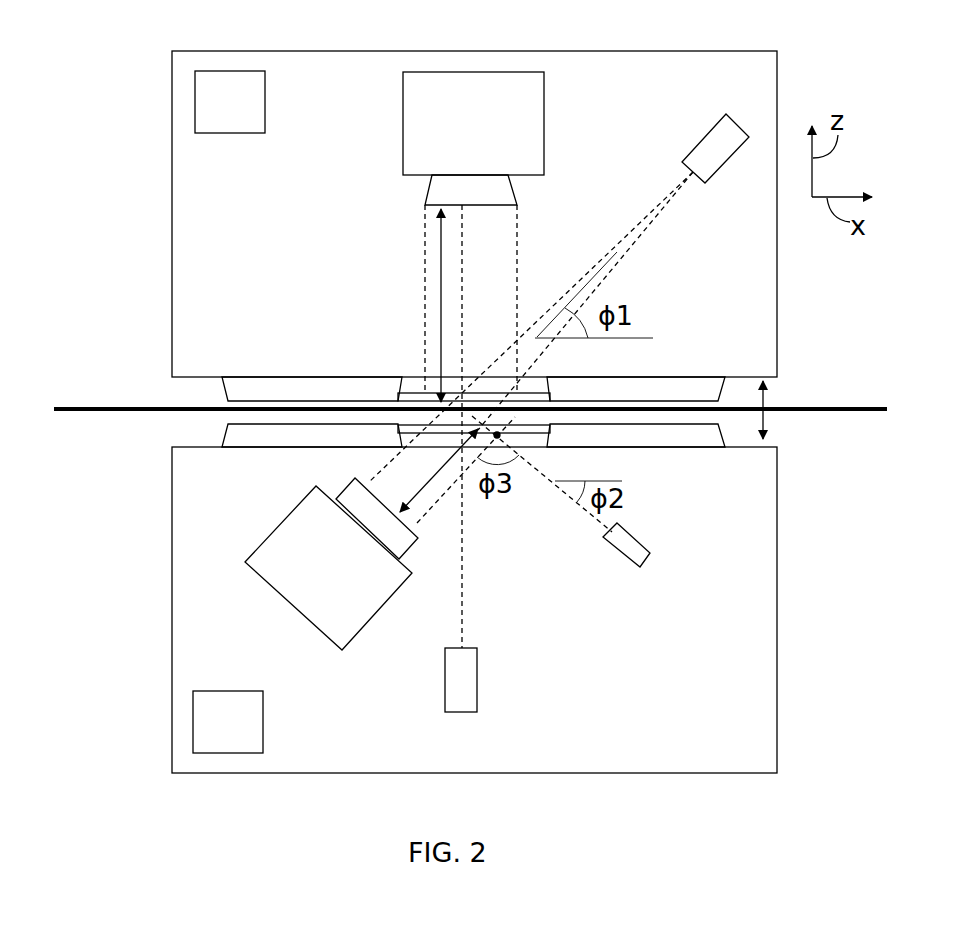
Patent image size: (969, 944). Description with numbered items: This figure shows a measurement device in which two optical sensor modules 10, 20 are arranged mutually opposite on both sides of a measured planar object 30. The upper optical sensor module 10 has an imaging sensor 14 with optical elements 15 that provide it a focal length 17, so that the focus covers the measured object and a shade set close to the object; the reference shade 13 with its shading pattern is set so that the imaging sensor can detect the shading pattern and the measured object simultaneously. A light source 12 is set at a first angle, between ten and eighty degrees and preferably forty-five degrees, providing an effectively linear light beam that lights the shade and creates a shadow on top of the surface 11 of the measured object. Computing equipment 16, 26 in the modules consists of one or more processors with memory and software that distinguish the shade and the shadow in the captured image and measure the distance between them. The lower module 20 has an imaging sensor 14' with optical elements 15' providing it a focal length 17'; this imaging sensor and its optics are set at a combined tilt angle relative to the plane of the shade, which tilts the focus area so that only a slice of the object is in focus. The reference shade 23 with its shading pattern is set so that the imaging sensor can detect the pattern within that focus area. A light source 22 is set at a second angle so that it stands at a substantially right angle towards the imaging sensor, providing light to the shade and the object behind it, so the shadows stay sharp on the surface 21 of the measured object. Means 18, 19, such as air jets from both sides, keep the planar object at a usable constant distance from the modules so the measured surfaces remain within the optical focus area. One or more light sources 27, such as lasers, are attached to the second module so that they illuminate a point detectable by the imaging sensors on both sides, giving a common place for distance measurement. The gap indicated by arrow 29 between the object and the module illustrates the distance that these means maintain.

The optical sensor module 10 is at (778, 78).
The surface of the measured object 11 is at (862, 406).
The light source 12 is at (686, 152).
The reference shade 13 is at (413, 388).
The imaging sensor 14 is at (496, 123).
The optical elements 15 is at (509, 180).
The computing equipment 16 is at (265, 120).
The focal length 17 is at (451, 426).
The means to keep the planar object in constant distance 18 is at (217, 402).
The means to keep the planar object in constant distance 19 is at (225, 424).
The optical sensor module 20 is at (778, 760).
The surface of the measured object 21 is at (870, 412).
The light source 22 is at (628, 563).
The reference shade 23 is at (500, 438).
The computing equipment 26 is at (263, 740).
The light source 27 is at (477, 702).
The gap 29 is at (765, 398).
The measured planar object 30 is at (112, 407).
The imaging sensor 14' is at (328, 588).
The optical elements 15' is at (413, 537).
The focal length 17' is at (457, 479).